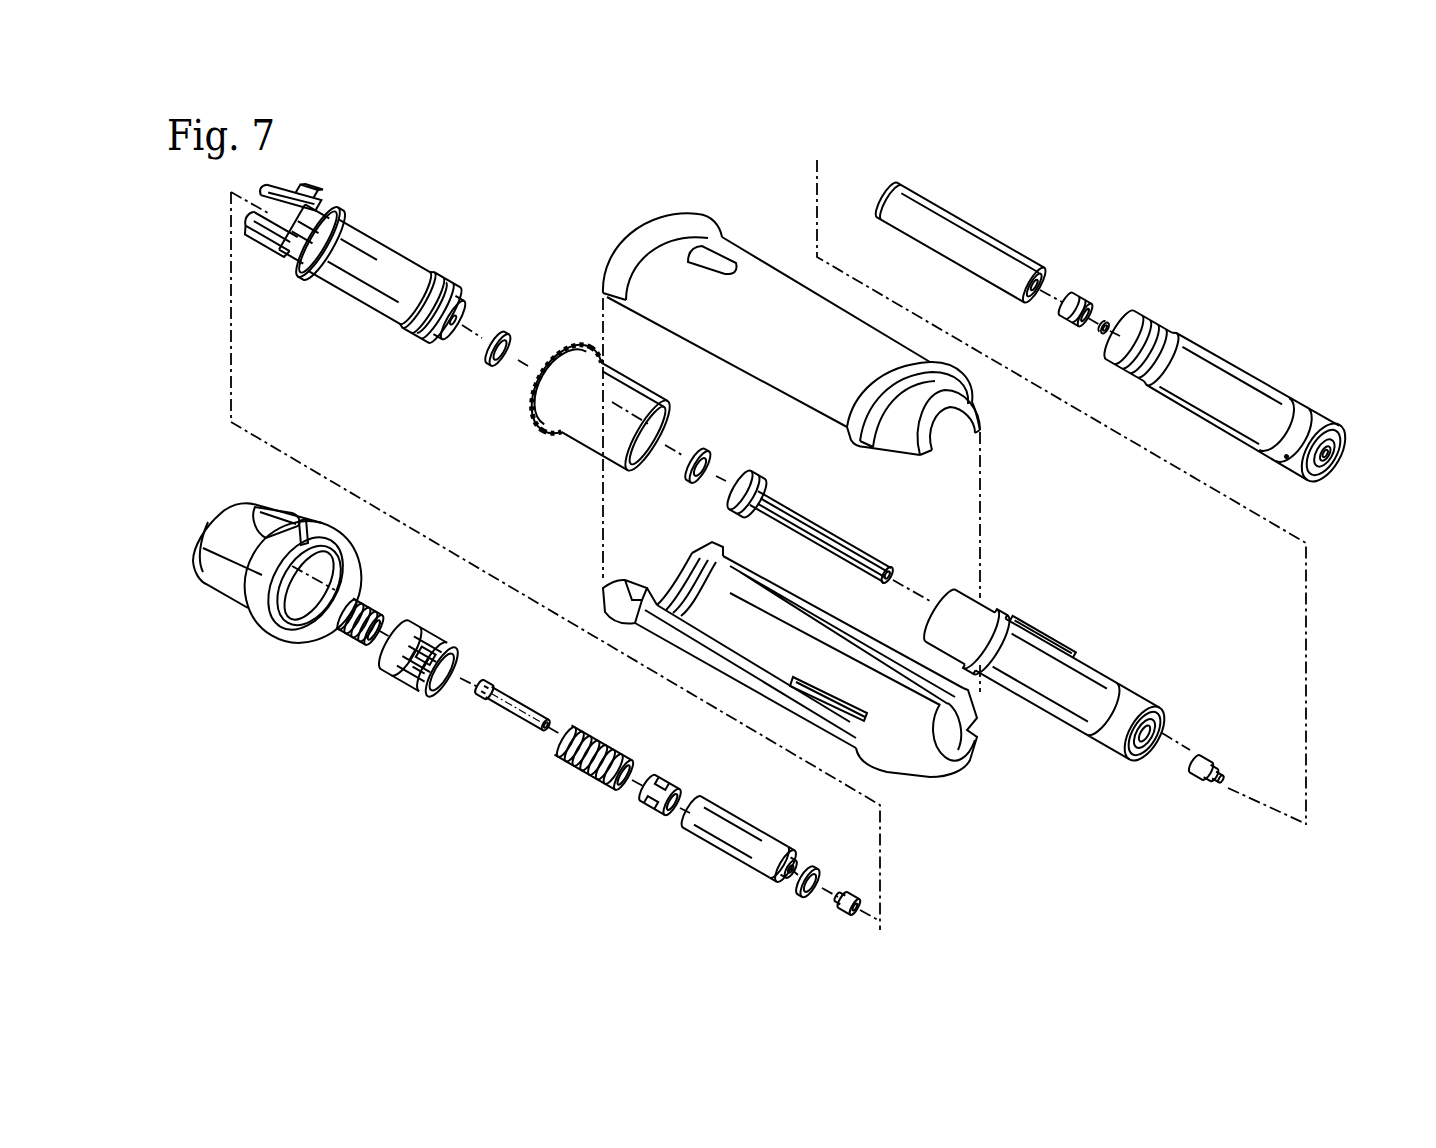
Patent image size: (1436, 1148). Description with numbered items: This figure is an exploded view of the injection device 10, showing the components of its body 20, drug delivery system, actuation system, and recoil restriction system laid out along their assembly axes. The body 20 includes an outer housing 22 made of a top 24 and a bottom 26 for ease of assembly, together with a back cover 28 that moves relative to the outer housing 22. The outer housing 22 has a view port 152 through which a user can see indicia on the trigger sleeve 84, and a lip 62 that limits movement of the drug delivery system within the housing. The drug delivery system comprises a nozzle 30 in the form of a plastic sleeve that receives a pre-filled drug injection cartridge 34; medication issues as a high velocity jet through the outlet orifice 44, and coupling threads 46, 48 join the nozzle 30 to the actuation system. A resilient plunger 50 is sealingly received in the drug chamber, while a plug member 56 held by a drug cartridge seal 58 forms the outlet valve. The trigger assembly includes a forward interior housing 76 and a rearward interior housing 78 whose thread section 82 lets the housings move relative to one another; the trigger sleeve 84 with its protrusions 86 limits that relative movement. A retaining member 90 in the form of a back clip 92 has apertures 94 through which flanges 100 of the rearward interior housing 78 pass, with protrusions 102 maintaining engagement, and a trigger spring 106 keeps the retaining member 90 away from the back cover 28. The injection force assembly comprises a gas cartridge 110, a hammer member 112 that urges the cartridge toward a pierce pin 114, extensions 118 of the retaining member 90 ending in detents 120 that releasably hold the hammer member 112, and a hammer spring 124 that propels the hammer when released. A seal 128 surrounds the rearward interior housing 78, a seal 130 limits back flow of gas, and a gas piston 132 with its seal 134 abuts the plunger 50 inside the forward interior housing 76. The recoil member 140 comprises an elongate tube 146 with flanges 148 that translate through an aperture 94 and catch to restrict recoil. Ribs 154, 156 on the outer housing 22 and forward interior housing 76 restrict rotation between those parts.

The device 10 is at (1265, 237).
The body 20 is at (770, 190).
The outer housing 22 is at (740, 244).
The top 24 is at (782, 286).
The bottom 26 is at (899, 779).
The back cover 28 is at (220, 598).
The nozzle 30 is at (1256, 373).
The drug injection cartridge 34 is at (976, 223).
The outlet orifice 44 is at (1328, 456).
The coupling thread 46 is at (1160, 323).
The coupling thread 48 is at (1174, 731).
The plunger 50 is at (1203, 780).
The plug member 56 is at (1110, 319).
The drug cartridge seal 58 is at (1077, 292).
The lip 62 is at (962, 750).
The forward interior housing 76 is at (1060, 723).
The rearward interior housing 78 is at (340, 290).
The thread section 82 is at (420, 268).
The trigger sleeve 84 is at (583, 452).
The protrusions 86 is at (547, 432).
The retaining member 90 is at (401, 692).
The back clip 92 is at (409, 618).
The apertures 94 is at (428, 616).
The flanges 100 is at (276, 188).
The protrusions 102 is at (305, 204).
The trigger spring 106 is at (359, 643).
The gas cartridge 110 is at (727, 855).
The hammer member 112 is at (657, 816).
The pierce pin 114 is at (849, 893).
The extensions 118 is at (437, 669).
The detents 120 is at (449, 666).
The hammer spring 124 is at (584, 771).
The seal 128 is at (490, 368).
The seal 130 is at (812, 867).
The gas piston 132 is at (823, 532).
The seal 134 is at (689, 483).
The recoil member 140 is at (517, 687).
The elongate tube 146 is at (541, 713).
The flanges 148 is at (488, 683).
The view port 152 is at (708, 247).
The ribs 154 is at (799, 678).
The ribs 156 is at (1050, 632).